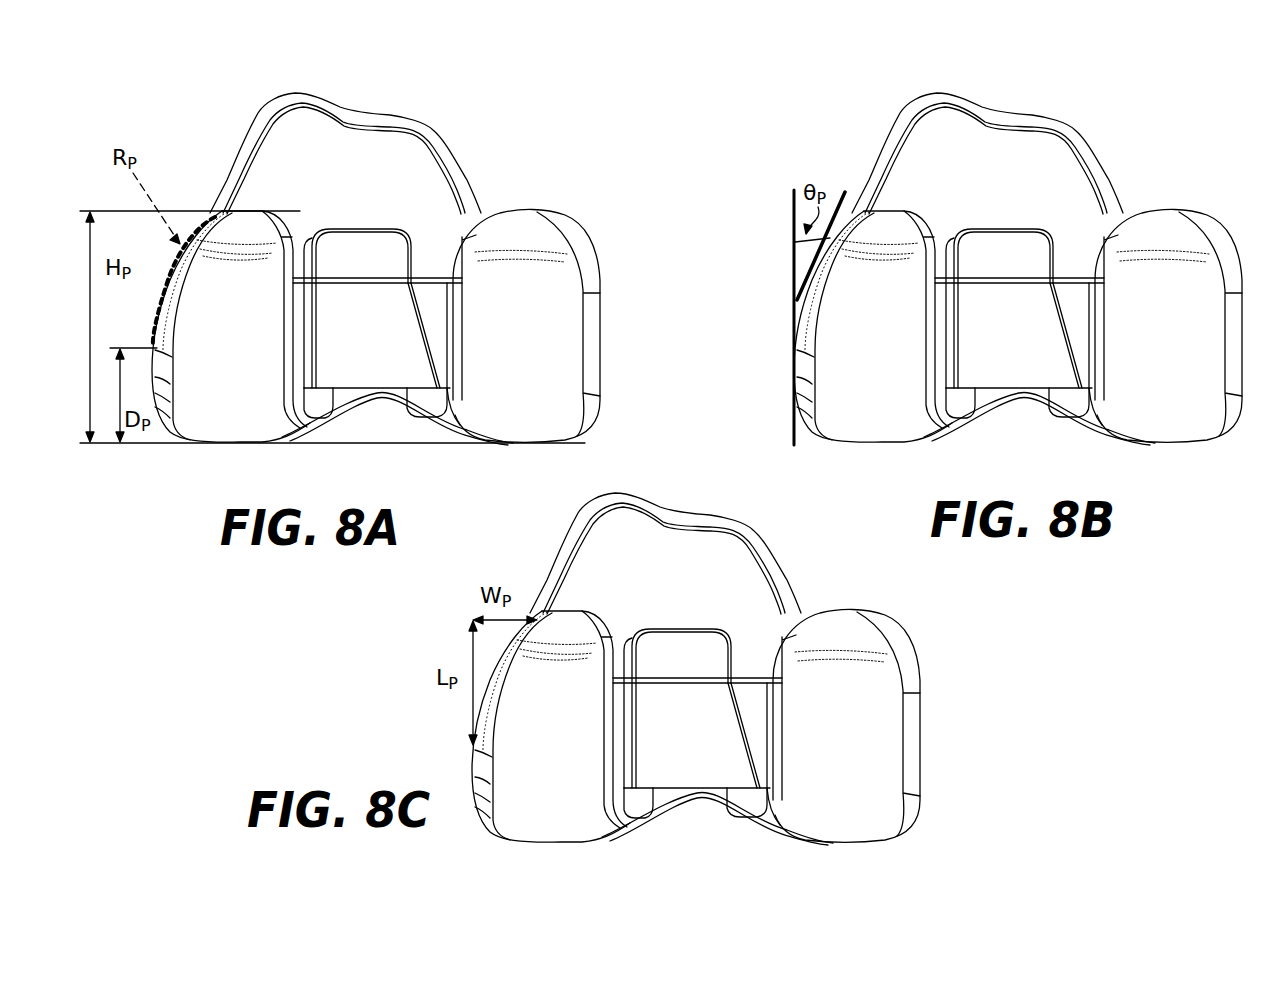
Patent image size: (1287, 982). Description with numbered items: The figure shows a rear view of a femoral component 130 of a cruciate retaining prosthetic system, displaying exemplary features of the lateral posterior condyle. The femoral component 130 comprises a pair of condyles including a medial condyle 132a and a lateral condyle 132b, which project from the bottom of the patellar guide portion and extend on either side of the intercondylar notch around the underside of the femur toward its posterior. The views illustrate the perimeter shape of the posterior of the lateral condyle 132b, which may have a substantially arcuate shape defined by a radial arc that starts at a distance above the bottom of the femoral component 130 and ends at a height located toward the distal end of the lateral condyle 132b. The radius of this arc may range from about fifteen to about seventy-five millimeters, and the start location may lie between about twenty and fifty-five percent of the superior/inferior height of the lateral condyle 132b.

In FIG. 8A, the femoral component 130 is at (400, 255).
In FIG. 8B, the femoral component 130 is at (991, 247).
In FIG. 8C, the femoral component 130 is at (603, 669).
In FIG. 8A, the lateral condyle 132b is at (222, 263).
In FIG. 8B, the lateral condyle 132b is at (873, 287).
In FIG. 8C, the lateral condyle 132b is at (551, 678).
In FIG. 8A, the medial condyle 132a is at (567, 278).
In FIG. 8B, the medial condyle 132a is at (1168, 286).
In FIG. 8C, the medial condyle 132a is at (846, 690).